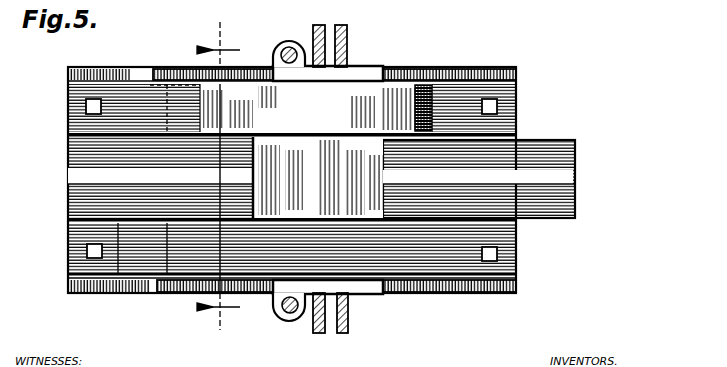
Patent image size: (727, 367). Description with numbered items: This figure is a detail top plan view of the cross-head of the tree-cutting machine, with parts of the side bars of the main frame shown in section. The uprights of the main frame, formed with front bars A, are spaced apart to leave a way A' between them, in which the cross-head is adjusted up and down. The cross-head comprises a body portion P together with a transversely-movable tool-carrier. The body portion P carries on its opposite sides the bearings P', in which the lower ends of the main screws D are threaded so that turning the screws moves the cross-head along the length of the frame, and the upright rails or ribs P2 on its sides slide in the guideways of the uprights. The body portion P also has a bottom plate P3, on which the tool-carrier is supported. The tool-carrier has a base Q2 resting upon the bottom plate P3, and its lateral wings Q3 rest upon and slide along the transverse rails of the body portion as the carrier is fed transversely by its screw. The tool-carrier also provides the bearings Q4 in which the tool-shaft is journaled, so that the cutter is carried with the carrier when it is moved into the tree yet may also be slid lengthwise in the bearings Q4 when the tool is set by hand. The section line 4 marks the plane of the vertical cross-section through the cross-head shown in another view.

The section line 4 4 is at (218, 177).
The bearing P' is at (274, 46).
The main screw D is at (291, 48).
The upright rail or rib P2 is at (345, 50).
The way A' is at (344, 60).
The bottom plate P3 is at (448, 95).
The lateral wing Q3 is at (307, 108).
The base Q2 is at (319, 178).
The bearing Q4 is at (80, 185).
The body portion P is at (289, 330).
The front bar A is at (330, 328).